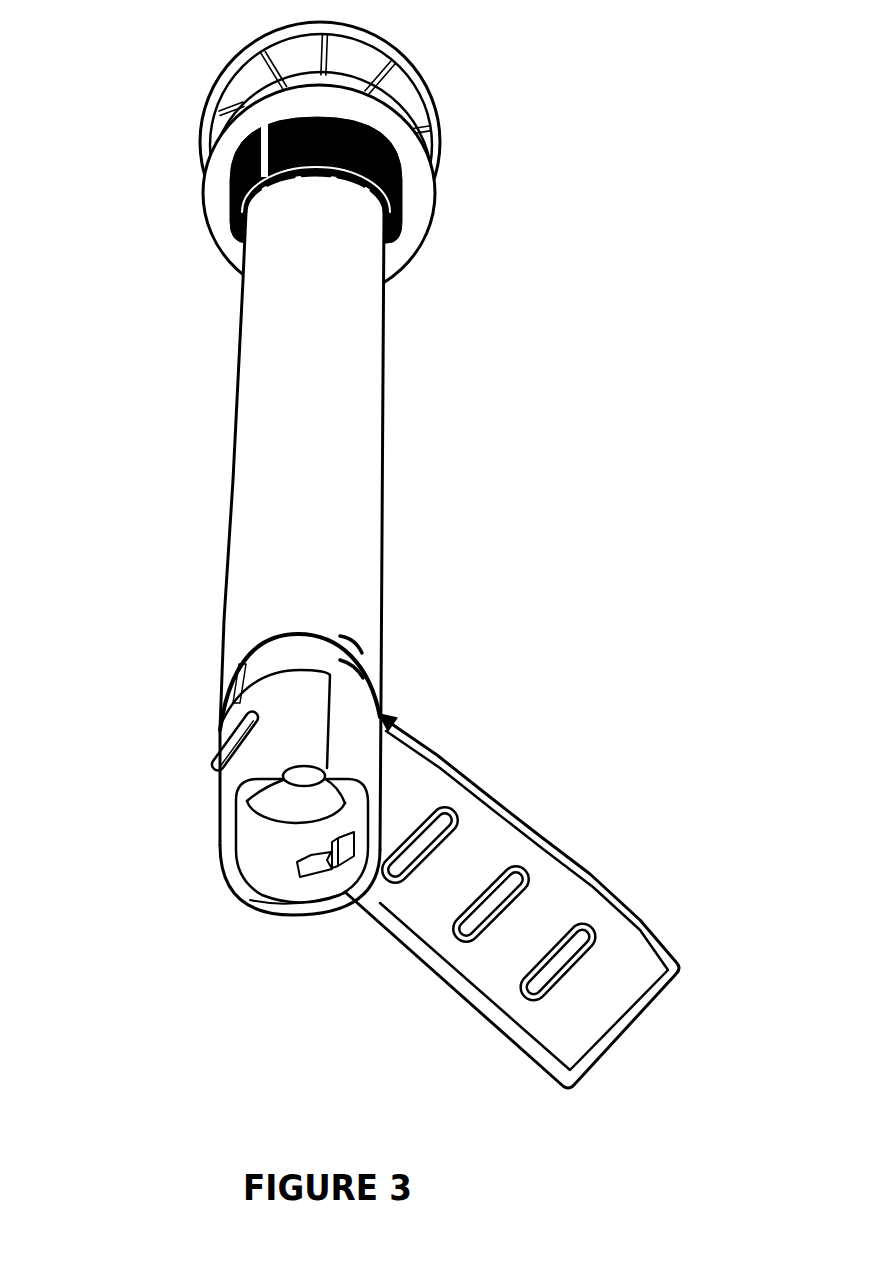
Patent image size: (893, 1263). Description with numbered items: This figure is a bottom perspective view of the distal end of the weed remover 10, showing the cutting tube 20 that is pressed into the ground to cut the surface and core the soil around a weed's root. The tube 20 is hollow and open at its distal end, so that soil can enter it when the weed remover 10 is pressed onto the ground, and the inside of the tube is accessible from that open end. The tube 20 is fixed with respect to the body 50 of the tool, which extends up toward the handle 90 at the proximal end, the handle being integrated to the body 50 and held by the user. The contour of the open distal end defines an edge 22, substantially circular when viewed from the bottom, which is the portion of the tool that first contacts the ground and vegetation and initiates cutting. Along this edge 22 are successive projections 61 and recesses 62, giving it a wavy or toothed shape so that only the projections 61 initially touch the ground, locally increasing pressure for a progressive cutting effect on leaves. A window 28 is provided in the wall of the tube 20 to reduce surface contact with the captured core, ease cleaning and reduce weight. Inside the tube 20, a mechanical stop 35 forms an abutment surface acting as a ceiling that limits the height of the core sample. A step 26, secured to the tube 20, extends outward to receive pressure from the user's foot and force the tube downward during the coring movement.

The weed remover 10 is at (447, 415).
The cutting tube 20 is at (232, 787).
The edge 22 is at (235, 876).
The step 26 is at (583, 873).
The window 28 is at (226, 735).
The mechanical stop 35 is at (327, 797).
The body 50 is at (383, 492).
The projections 61 is at (277, 917).
The recesses 62 is at (327, 917).
The handle 90 is at (430, 213).